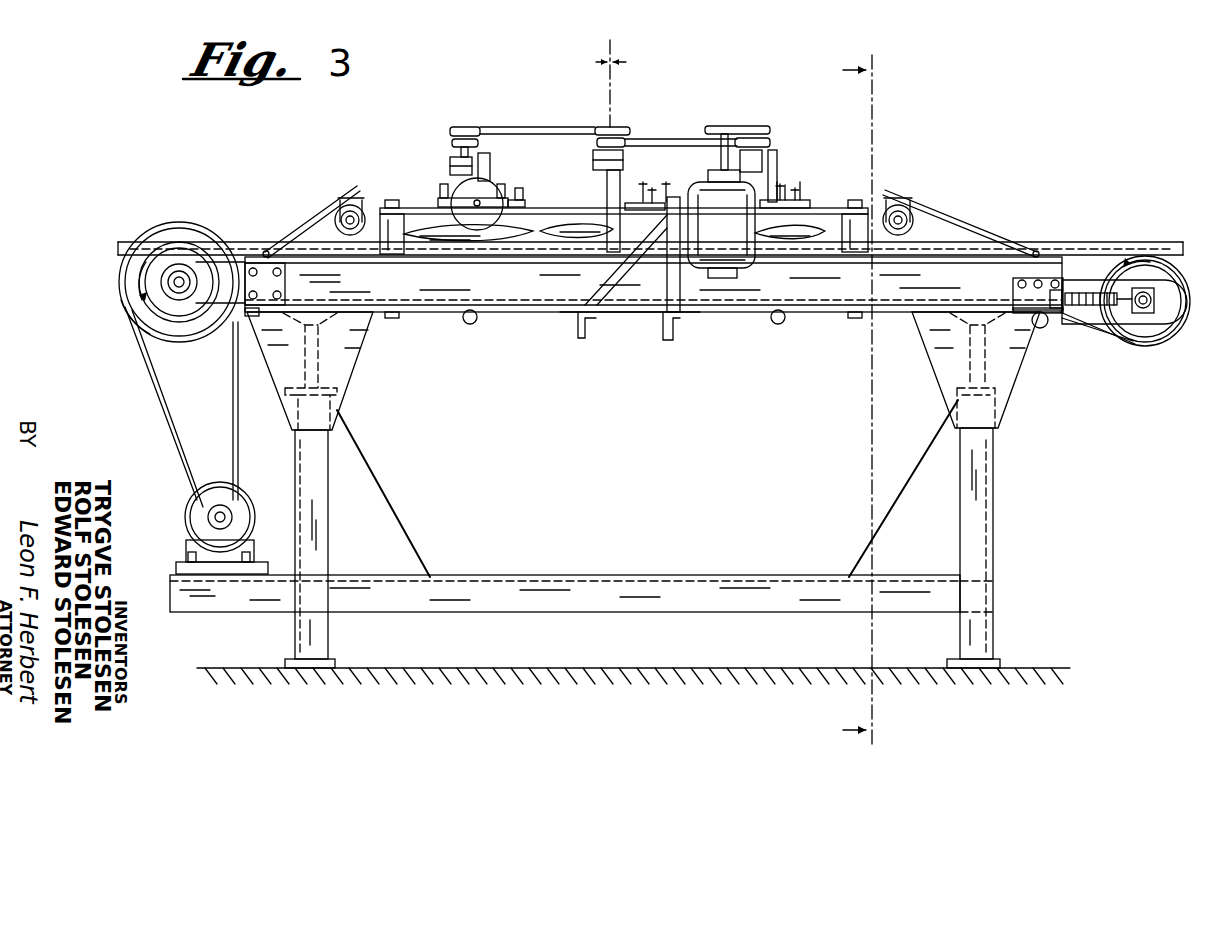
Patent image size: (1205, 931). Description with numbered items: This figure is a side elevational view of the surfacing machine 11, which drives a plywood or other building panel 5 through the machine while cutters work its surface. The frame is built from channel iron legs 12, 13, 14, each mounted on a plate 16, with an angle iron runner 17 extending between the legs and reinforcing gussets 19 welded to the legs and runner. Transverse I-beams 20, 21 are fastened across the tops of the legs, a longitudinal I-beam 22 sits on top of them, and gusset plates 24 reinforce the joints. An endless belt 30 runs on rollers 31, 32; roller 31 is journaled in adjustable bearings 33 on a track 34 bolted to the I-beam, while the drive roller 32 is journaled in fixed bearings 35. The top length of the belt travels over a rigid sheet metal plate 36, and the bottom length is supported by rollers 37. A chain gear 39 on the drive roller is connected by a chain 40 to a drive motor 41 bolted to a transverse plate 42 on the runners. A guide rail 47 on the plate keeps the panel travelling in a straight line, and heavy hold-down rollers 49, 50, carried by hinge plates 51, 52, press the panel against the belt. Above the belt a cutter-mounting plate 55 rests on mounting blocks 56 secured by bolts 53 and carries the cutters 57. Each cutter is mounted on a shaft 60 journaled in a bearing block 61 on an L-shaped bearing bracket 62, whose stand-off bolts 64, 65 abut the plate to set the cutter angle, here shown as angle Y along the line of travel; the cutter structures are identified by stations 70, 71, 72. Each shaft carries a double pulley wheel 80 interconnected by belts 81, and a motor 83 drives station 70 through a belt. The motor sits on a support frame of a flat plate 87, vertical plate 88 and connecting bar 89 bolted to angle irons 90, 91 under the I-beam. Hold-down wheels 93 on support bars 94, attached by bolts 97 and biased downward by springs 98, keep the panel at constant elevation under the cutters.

The building panel 5 is at (1020, 240).
The surfacing machine 11 is at (1022, 165).
The channel iron leg 12 is at (993, 630).
The channel iron leg 13 is at (330, 636).
The channel iron leg 14 is at (988, 500).
The plate 16 is at (337, 662).
The angle iron runner 17 is at (722, 608).
The reinforcing gusset 19 is at (380, 480).
The transverse I-beam 20 is at (945, 370).
The transverse I-beam 21 is at (345, 380).
The longitudinal I-beam 22 is at (852, 316).
The gusset plate 24 is at (372, 345).
The endless belt 30 is at (1085, 245).
The roller 31 is at (1180, 335).
The drive roller 32 is at (121, 304).
The adjustable bearings 33 is at (1143, 312).
The track 34 is at (1040, 328).
The fixed bearings 35 is at (183, 296).
The sheet metal plate 36 is at (1042, 250).
The roller 37 is at (236, 335).
The chain gear 39 is at (183, 224).
The chain 40 is at (160, 410).
The drive motor 41 is at (192, 500).
The transverse plate 42 is at (255, 560).
The guide rail 47 is at (122, 242).
The hold-down roller 49 is at (910, 225).
The hold-down roller 50 is at (362, 203).
The hinge plate 51 is at (945, 230).
The hinge plate 52 is at (308, 212).
The bolt 53 is at (392, 215).
The cutter-mounting plate 55 is at (840, 220).
The mounting block 56 is at (372, 196).
The cutter 57 is at (505, 228).
The shaft 60 is at (607, 190).
The bearing block 61 is at (593, 162).
The L-shaped bearing bracket 62 is at (782, 170).
The stand-off bolt 64 is at (641, 183).
The stand-off bolt 65 is at (668, 184).
The station 70 is at (755, 122).
The station 71 is at (622, 120).
The station 72 is at (475, 120).
The double pulley wheel 80 is at (640, 133).
The belt 81 is at (530, 128).
The motor 83 is at (745, 268).
The flat plate 87 is at (612, 315).
The vertical plate 88 is at (682, 280).
The connecting bar 89 is at (605, 278).
The angle iron 90 is at (678, 335).
The angle iron 91 is at (578, 335).
The hold-down wheel 93 is at (488, 182).
The support bar 94 is at (438, 205).
The bolt 97 is at (490, 195).
The spring 98 is at (450, 172).